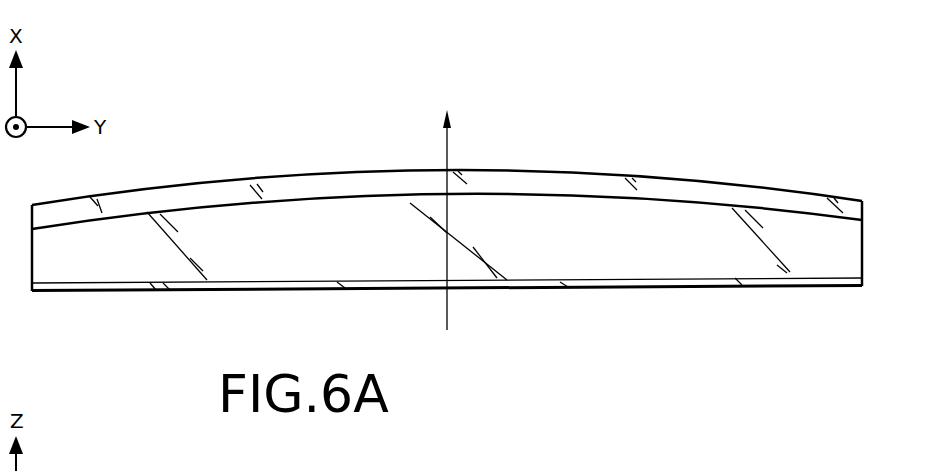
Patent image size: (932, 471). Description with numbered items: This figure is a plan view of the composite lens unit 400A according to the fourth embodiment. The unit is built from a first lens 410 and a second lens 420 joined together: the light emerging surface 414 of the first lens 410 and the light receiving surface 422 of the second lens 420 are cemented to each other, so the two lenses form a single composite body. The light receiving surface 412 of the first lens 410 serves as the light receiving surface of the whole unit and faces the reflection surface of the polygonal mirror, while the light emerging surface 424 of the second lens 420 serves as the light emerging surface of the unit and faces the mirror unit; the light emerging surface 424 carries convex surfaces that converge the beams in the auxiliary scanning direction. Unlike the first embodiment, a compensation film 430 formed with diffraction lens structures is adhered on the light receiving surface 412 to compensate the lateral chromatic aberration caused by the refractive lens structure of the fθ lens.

The composite lens unit 400A is at (499, 126).
The light emerging surface 424 is at (338, 172).
The light receiving surface 422 is at (618, 198).
The light emerging surface 414 is at (653, 197).
The second lens 420 is at (853, 209).
The first lens 410 is at (850, 255).
The light receiving surface 412 is at (660, 278).
The compensation film 430 is at (300, 287).